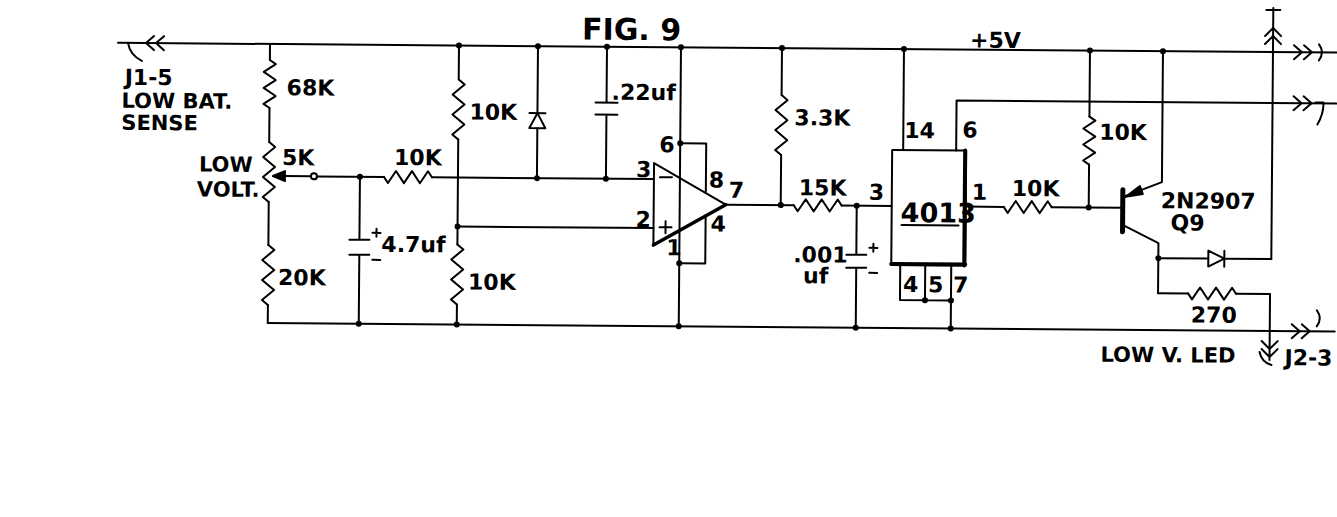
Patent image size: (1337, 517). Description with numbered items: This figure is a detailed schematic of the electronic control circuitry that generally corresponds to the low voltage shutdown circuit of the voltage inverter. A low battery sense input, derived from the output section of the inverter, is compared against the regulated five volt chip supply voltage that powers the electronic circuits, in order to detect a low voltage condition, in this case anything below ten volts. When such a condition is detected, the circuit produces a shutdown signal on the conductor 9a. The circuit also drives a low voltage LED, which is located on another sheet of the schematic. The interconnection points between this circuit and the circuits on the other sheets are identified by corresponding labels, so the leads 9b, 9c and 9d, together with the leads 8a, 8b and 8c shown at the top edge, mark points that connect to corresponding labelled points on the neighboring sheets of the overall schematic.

The conductor 9a is at (1272, 14).
The connector lead 9b is at (1311, 39).
The connector lead 9c is at (1307, 125).
The connector lead 9d is at (1308, 315).
The connector lead (FIG. 8) 8a is at (536, 0).
The connector lead (FIG. 8) 8b is at (686, 0).
The connector lead (FIG. 8) 8c is at (1130, 0).